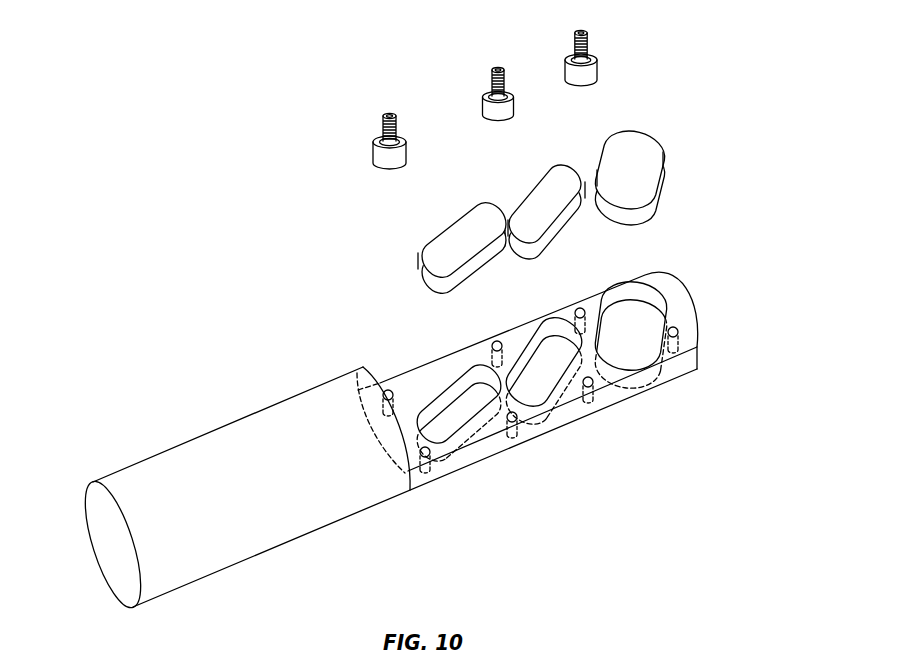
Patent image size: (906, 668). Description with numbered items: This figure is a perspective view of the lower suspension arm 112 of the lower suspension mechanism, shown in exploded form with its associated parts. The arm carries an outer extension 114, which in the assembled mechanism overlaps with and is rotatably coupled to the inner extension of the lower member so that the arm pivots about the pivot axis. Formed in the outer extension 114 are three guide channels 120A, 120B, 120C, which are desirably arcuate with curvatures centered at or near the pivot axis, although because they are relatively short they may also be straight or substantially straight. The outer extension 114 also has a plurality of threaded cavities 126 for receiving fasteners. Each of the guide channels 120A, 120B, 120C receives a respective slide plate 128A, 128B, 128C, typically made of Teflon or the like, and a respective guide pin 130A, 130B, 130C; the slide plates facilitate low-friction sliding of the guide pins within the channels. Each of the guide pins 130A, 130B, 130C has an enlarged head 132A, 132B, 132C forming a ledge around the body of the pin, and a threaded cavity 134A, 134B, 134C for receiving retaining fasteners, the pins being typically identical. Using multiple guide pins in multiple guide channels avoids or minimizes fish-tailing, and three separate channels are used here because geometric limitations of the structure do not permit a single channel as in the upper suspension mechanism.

The lower suspension arm 112 is at (247, 268).
The outer extension 114 is at (428, 360).
The guide channel 120A is at (458, 428).
The guide channel 120B is at (548, 393).
The guide channel 120C is at (633, 356).
The threaded cavities 126 is at (496, 340).
The slide plate 128A is at (455, 218).
The slide plate 128B is at (552, 172).
The slide plate 128C is at (655, 142).
The guide pin 130A is at (384, 133).
The guide pin 130B is at (489, 98).
The guide pin 130C is at (575, 43).
The enlarged head 132A is at (375, 157).
The enlarged head 132B is at (509, 105).
The enlarged head 132C is at (595, 70).
The threaded cavity 134A is at (387, 116).
The threaded cavity 134B is at (496, 68).
The threaded cavity 134C is at (584, 32).